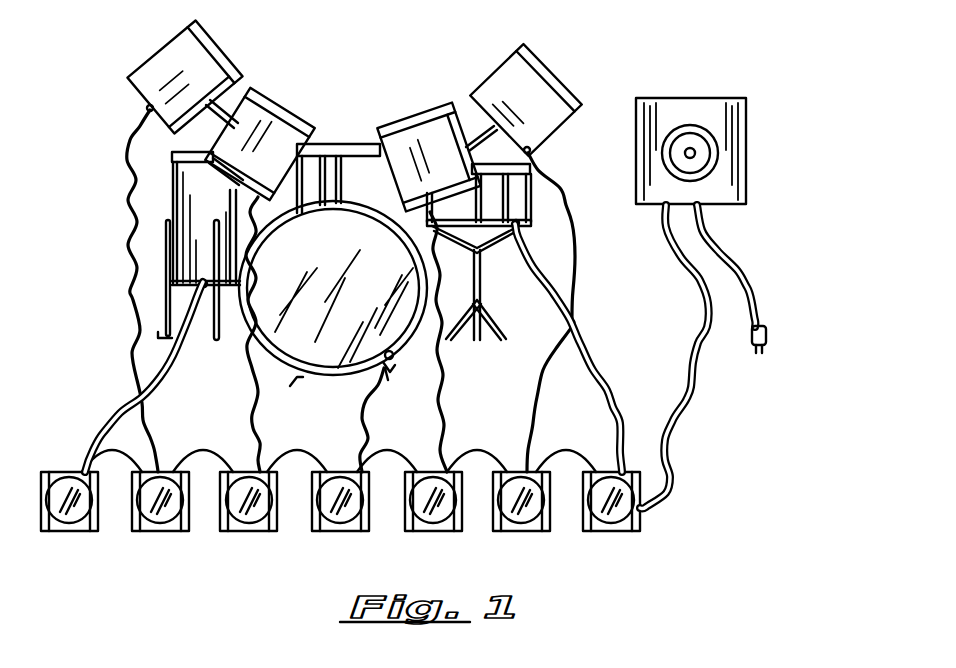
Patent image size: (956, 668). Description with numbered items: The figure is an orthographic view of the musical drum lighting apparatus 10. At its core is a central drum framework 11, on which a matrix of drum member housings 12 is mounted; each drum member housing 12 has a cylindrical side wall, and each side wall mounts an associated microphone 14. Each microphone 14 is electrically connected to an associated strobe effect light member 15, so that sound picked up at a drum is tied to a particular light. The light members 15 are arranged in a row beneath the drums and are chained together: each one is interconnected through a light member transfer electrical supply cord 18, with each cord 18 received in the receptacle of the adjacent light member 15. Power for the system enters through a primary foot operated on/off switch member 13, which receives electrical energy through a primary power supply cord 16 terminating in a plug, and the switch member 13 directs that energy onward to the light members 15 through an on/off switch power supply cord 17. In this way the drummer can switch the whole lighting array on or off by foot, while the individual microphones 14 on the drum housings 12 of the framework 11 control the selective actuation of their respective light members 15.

The musical drum lighting apparatus 10 is at (645, 64).
The central drum framework 11 is at (362, 143).
The drum member housing 12 is at (207, 62).
The primary foot operated on/off switch member 13 is at (747, 133).
The microphone 14 is at (390, 203).
The strobe effect light member 15 is at (97, 518).
The primary power supply cord 16 is at (750, 280).
The on/off switch power supply cord 17 is at (693, 385).
The light member transfer electrical supply cord 18 is at (262, 447).